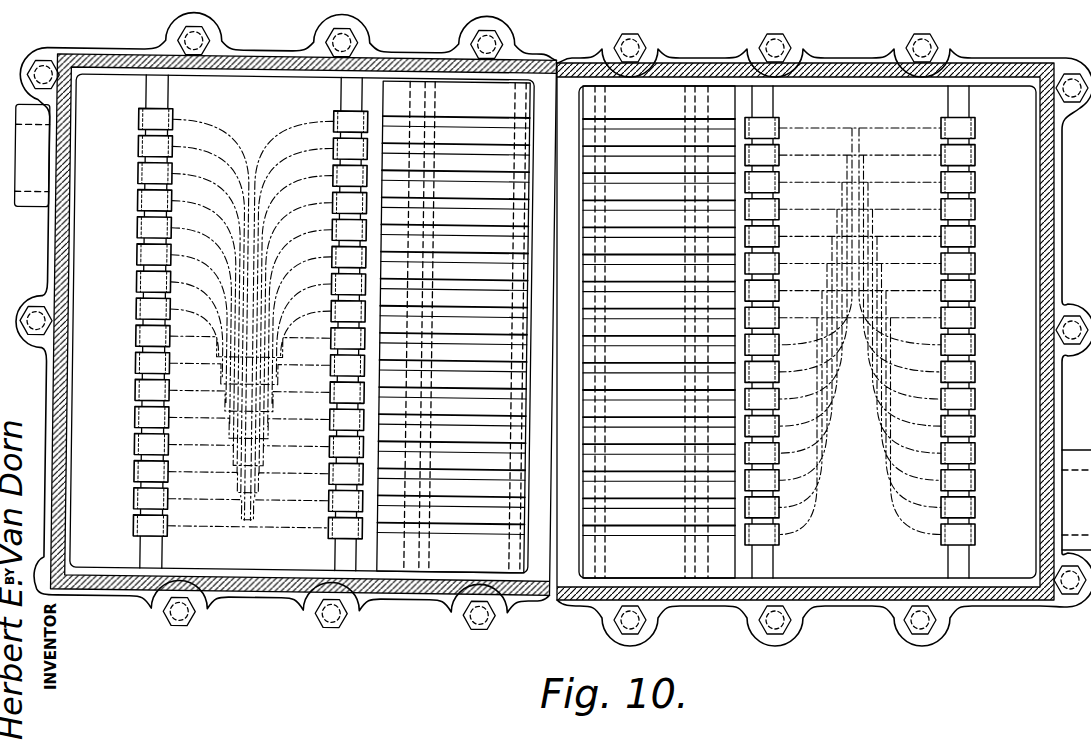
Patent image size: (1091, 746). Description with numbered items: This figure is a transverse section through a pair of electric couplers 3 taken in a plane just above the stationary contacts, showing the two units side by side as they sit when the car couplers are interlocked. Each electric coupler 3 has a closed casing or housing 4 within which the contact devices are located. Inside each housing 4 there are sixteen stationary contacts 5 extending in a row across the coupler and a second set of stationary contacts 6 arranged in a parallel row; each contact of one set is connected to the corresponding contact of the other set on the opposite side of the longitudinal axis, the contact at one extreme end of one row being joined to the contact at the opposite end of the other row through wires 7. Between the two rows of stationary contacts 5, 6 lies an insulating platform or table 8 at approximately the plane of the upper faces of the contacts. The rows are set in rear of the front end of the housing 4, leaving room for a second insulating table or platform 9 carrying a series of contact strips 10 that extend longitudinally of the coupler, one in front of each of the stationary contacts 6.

The electric coupler 3 is at (254, 44).
The closed casing or housing 4 is at (396, 62).
The stationary contacts 5 is at (133, 443).
The second set of stationary contacts 6 is at (330, 121).
The wires 7 is at (272, 145).
The platform or table 8 is at (244, 552).
The second table or platform 9 is at (445, 558).
The contact strips 10 is at (467, 480).